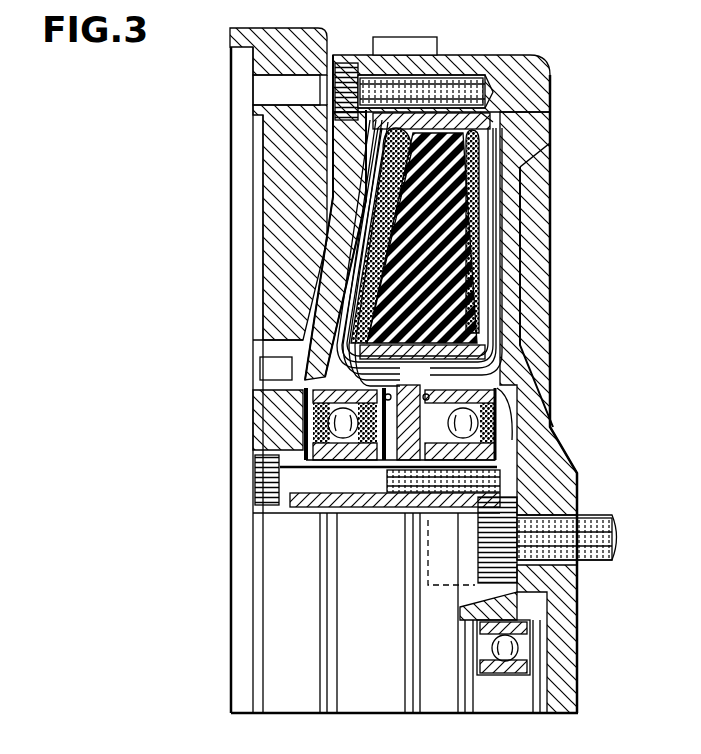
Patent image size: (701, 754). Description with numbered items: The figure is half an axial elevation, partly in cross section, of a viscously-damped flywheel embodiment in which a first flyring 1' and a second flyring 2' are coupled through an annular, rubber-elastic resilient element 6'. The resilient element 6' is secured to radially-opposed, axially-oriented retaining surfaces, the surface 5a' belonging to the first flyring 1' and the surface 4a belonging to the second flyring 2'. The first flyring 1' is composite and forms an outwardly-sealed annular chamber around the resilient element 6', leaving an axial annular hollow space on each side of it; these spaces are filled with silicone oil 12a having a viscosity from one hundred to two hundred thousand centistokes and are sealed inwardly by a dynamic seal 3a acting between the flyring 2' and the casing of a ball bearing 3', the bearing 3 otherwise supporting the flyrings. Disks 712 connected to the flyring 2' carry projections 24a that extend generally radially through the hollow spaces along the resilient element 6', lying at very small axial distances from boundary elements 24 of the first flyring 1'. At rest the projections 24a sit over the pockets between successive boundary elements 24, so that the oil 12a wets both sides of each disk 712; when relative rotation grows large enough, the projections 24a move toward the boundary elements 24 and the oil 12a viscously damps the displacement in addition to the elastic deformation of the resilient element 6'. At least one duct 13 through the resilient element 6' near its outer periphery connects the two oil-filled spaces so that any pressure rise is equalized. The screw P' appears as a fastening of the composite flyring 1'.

The second flyring 2' is at (404, 358).
The first flyring 1' is at (461, 368).
The fastening screw P' is at (414, 65).
The retaining surface 5a' is at (515, 129).
The duct 13 is at (499, 148).
The silicone oil 12a is at (457, 190).
The boundary elements 24 is at (490, 263).
The projections 24a is at (492, 291).
The resilient element 6' is at (463, 250).
The disks 712 is at (505, 344).
The dynamic seal 3a is at (392, 346).
The threaded shaft end 4a is at (430, 348).
The bearing 3 is at (340, 422).
The ball bearing 3' is at (418, 424).